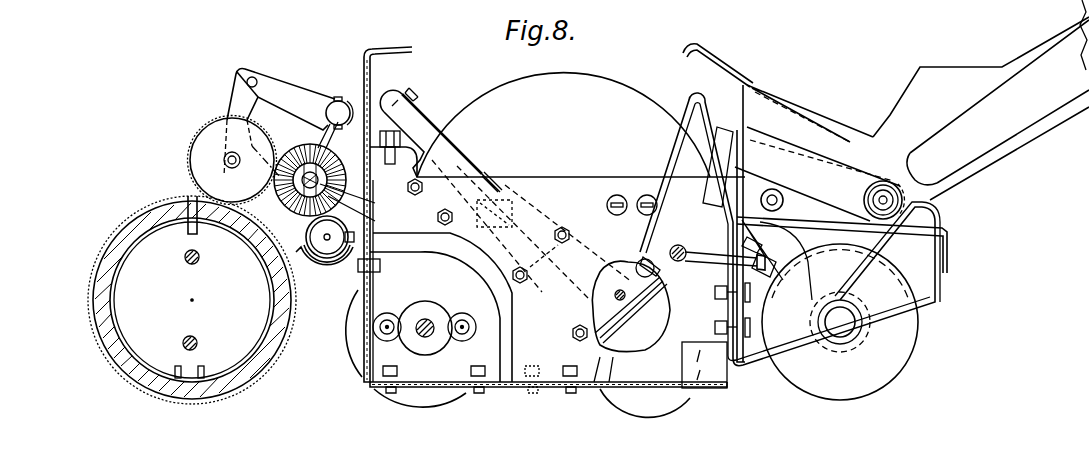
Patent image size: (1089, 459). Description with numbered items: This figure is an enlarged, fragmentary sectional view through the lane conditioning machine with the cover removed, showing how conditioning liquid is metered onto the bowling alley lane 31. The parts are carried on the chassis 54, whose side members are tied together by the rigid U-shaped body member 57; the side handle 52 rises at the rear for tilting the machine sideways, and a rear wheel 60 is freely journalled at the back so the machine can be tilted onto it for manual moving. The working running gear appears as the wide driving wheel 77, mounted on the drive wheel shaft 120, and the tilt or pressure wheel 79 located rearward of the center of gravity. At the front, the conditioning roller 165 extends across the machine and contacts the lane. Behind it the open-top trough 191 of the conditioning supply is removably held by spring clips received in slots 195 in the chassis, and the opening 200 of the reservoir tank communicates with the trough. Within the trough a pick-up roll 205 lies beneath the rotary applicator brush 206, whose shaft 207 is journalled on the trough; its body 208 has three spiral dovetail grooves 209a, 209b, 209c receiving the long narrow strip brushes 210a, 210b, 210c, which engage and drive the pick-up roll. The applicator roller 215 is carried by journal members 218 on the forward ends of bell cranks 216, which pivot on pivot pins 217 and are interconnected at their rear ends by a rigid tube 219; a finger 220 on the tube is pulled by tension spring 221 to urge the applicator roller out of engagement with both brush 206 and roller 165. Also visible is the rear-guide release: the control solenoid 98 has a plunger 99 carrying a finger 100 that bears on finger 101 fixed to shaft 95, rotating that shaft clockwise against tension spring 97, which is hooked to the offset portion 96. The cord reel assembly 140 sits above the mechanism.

The bowling alley lane 31 is at (731, 305).
The side handle 52 is at (960, 80).
The chassis 54 is at (344, 374).
The U-shaped body member 57 is at (357, 328).
The rear wheels 60 is at (897, 349).
The driving wheel 77 is at (410, 395).
The tilt or pressure wheel 79 is at (612, 410).
The shaft 95 is at (775, 245).
The offset portion 96 is at (700, 247).
The tension spring 97 is at (687, 270).
The control solenoid 98 is at (601, 303).
The plunger 99 is at (413, 127).
The finger 100 is at (637, 307).
The finger 101 is at (630, 260).
The drive wheel shaft 120 is at (431, 318).
The reel assembly 140 is at (621, 74).
The conditioning roller 165 is at (119, 392).
The trough 191 is at (306, 306).
The slots 195 is at (385, 142).
The opening 200 is at (341, 262).
The pick-up roll 205 is at (346, 244).
The rotary metering roll or applicator brush 206 is at (258, 200).
The shaft 207 is at (278, 178).
The body 208 is at (326, 143).
The spiral dovetail groove 209a is at (366, 200).
The spiral dovetail groove 209b is at (282, 222).
The spiral dovetail groove 209c is at (278, 148).
The strip brush 210a is at (371, 214).
The strip brush 210b is at (288, 205).
The strip brush 210c is at (300, 140).
The applicator roller 215 is at (227, 116).
The bell cranks 216 is at (271, 76).
The pivot pins 217 is at (252, 77).
The applicator roll journal members 218 is at (224, 157).
The rigid tube 219 is at (338, 101).
The finger 220 is at (381, 73).
The tension spring 221 is at (410, 97).